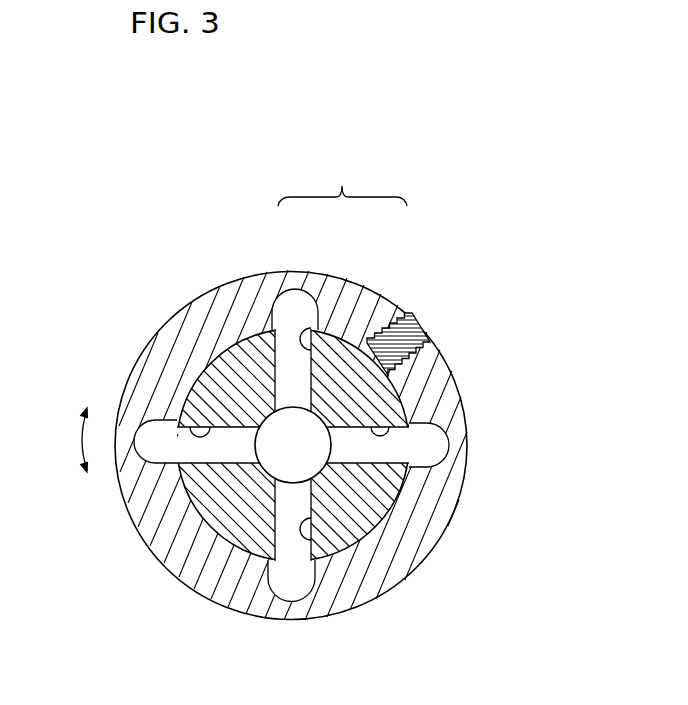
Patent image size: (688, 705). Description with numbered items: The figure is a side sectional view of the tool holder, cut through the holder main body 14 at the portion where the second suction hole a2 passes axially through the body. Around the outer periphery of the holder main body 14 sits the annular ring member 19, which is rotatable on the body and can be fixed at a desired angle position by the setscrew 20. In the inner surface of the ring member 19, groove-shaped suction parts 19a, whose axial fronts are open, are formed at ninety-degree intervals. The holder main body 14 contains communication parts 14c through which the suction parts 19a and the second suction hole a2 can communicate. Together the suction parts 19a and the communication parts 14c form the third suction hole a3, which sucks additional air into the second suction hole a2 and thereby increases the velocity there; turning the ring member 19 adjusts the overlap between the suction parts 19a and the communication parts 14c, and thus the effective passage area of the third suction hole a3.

The holder main body 14 is at (210, 351).
The communication parts 14c is at (308, 338).
The ring member 19 is at (226, 278).
The suction parts 19a is at (293, 293).
The setscrew 20 is at (418, 320).
The second suction hole a2 is at (270, 455).
The third suction hole a3 is at (342, 176).